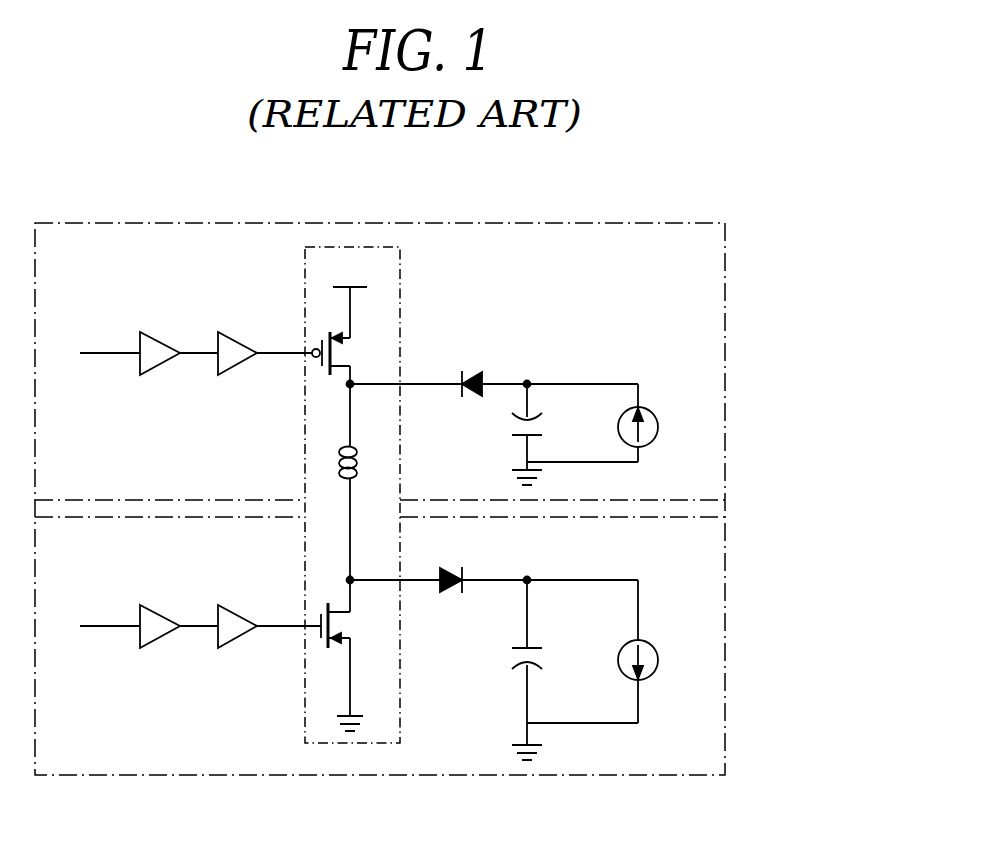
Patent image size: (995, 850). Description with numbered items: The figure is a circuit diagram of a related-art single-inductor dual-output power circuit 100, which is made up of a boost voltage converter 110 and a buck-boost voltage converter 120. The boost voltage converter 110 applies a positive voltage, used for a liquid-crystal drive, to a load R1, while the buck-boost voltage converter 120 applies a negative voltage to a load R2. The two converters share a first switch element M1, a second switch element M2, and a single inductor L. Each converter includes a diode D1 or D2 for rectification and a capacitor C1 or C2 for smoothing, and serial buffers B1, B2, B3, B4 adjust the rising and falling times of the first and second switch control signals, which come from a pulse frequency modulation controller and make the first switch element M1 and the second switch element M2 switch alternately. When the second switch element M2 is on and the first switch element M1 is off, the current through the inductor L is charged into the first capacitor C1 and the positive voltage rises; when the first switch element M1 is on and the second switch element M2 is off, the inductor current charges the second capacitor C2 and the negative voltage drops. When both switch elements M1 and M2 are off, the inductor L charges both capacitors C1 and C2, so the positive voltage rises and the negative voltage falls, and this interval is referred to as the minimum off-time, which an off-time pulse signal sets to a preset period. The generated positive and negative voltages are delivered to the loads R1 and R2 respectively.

The single-inductor dual-output power circuit 100 is at (826, 365).
The boost voltage converter 110 is at (442, 649).
The buck-boost voltage converter 120 is at (442, 419).
The serial buffer B1 is at (160, 641).
The serial buffer B2 is at (237, 642).
The serial buffer B3 is at (160, 366).
The serial buffer B4 is at (237, 367).
The first switch element M1 is at (358, 655).
The second switch element M2 is at (353, 321).
The inductor L is at (357, 482).
The diode D1 is at (455, 565).
The diode D2 is at (473, 367).
The first capacitor C1 is at (549, 670).
The second capacitor C2 is at (549, 434).
The load R1 is at (612, 651).
The load R2 is at (612, 423).